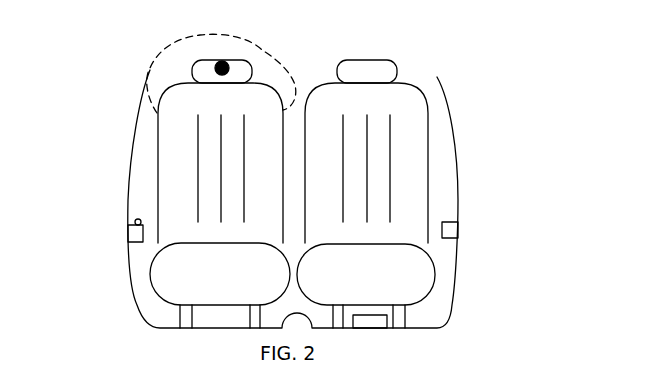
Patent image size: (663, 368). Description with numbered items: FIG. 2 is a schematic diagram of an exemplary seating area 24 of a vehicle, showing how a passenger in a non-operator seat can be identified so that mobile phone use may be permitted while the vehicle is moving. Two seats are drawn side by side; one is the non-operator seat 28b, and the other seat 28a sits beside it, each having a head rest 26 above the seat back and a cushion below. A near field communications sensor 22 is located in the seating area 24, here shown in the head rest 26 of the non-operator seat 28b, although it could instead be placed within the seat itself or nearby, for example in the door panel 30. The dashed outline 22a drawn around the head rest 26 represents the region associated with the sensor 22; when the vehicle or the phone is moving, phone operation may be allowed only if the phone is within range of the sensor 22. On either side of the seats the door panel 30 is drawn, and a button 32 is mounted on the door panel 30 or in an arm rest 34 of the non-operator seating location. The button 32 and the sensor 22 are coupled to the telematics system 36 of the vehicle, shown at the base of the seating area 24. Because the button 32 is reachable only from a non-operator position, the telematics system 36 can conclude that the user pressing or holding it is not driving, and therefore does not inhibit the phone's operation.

The near field communications sensor 22 is at (222, 55).
The deployed airbag 22a is at (250, 40).
The seating area 24 is at (317, 199).
The head rest 26 is at (192, 68).
The seat cushion 28a is at (435, 273).
The non-operator seat 28b is at (152, 290).
The door panel 30 is at (128, 173).
The button 32 is at (135, 221).
The arm rest 34 is at (132, 242).
The telematics system 36 is at (388, 327).